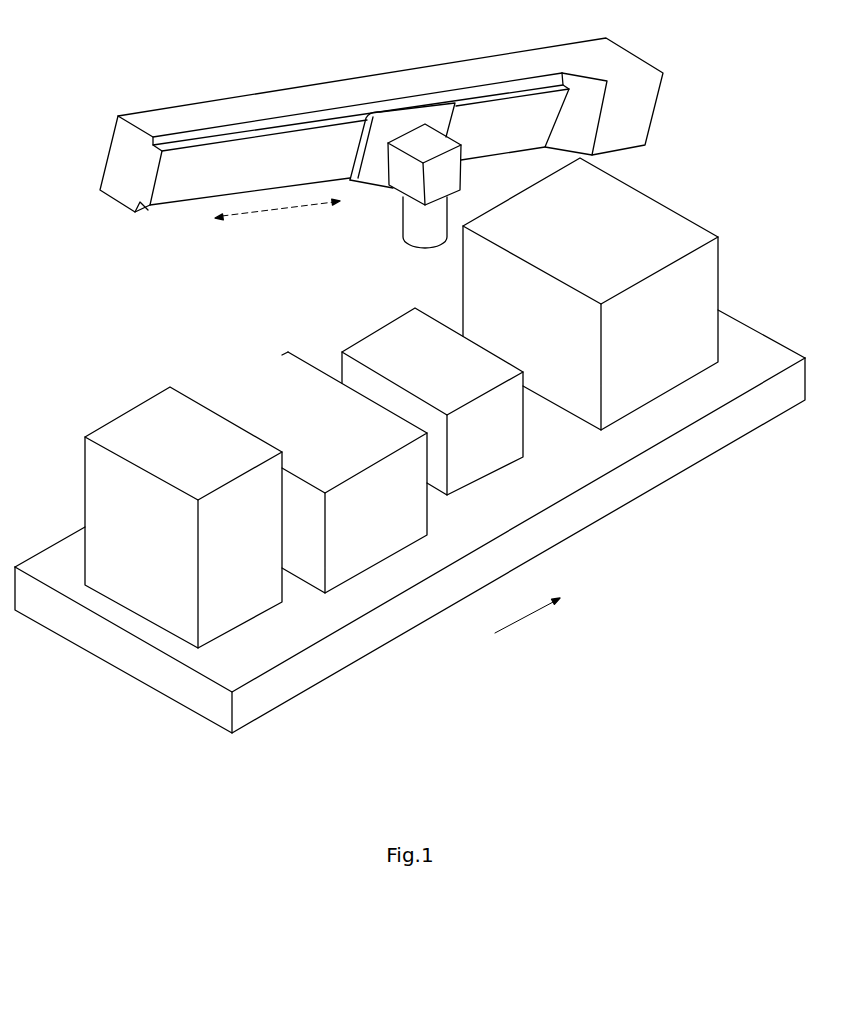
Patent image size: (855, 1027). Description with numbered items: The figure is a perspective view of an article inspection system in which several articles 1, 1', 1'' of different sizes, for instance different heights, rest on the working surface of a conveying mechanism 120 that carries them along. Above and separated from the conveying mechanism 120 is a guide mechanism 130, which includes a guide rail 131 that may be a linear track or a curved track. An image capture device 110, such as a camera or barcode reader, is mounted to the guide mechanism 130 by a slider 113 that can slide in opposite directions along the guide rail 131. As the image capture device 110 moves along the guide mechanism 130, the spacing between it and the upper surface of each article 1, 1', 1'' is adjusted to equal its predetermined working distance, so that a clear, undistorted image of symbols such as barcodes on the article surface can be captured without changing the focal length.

The article 1 is at (183, 486).
The article 1' is at (319, 447).
The article 1'' is at (412, 394).
The image capture device 110 is at (390, 200).
The slider 113 is at (390, 125).
The conveying mechanism 120 is at (663, 463).
The guide mechanism 130 is at (348, 148).
The guide rail 131 is at (210, 146).